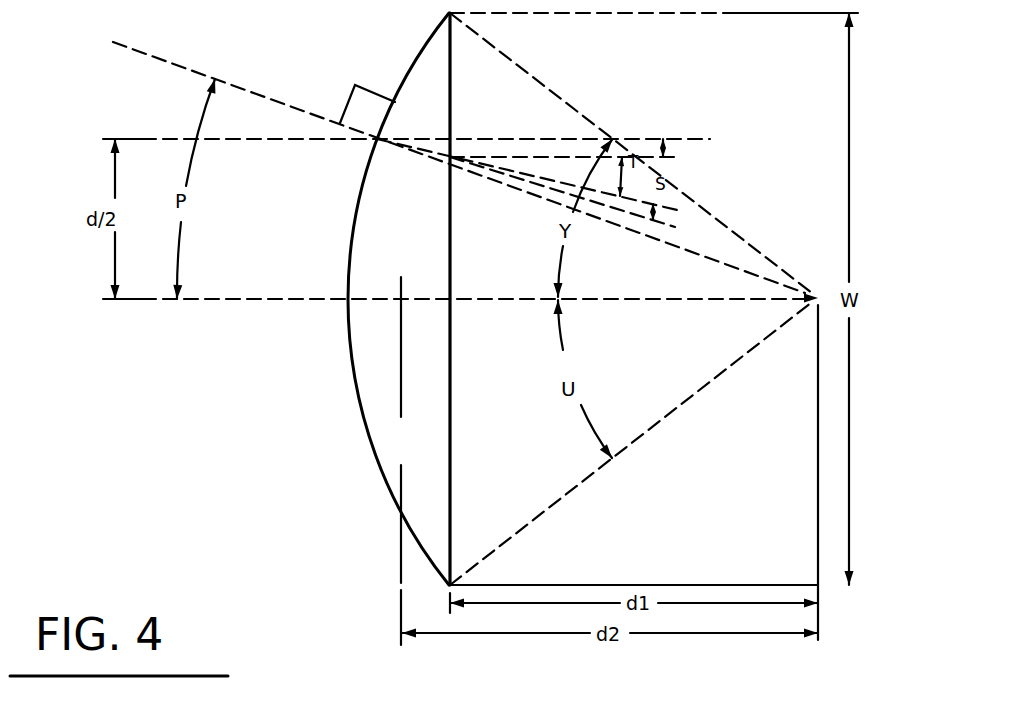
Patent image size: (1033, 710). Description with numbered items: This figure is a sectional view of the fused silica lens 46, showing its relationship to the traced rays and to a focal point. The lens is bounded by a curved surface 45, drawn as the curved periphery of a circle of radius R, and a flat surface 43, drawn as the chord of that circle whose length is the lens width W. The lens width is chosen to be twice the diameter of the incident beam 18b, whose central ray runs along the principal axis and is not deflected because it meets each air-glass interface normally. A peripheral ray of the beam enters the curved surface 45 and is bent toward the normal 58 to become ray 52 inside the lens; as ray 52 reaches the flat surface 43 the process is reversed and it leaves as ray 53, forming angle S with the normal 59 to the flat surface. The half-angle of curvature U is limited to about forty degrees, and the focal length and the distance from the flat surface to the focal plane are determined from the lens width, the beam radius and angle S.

The beam 18b is at (330, 300).
The flat surface 43 is at (451, 472).
The curved surface 45 is at (395, 498).
The fused silica lens 46 is at (404, 313).
The ray 52 is at (437, 152).
The ray 53 is at (580, 202).
The normal 58 is at (137, 47).
The normal 59 is at (401, 365).